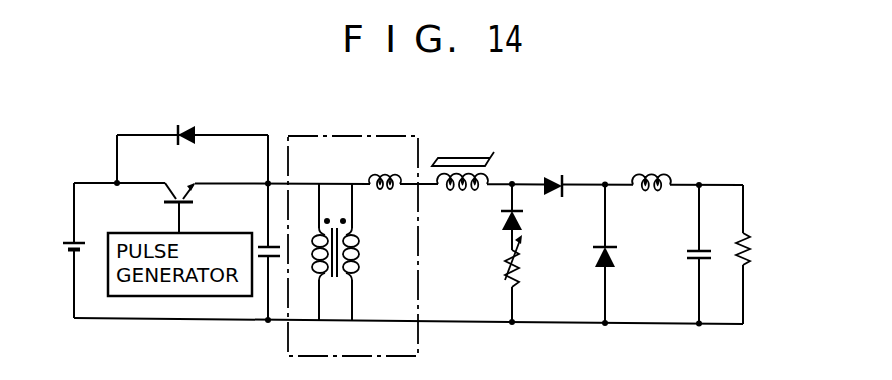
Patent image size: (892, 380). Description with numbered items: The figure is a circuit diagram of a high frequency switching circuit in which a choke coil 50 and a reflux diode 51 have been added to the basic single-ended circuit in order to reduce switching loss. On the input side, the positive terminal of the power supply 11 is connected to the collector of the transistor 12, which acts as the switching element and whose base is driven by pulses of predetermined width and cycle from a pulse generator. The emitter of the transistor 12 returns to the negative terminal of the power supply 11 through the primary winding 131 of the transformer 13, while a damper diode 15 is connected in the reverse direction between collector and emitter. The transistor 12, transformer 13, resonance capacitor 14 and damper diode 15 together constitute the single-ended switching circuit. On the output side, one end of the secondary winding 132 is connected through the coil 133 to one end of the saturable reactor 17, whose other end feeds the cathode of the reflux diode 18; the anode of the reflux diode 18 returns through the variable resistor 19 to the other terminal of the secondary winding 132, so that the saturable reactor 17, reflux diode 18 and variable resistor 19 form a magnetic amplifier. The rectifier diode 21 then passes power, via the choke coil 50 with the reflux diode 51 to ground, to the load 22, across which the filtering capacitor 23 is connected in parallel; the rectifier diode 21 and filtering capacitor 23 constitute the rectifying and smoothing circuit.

The power supply 11 is at (92, 240).
The transistor 12 is at (163, 194).
The transformer 13 is at (373, 135).
The resonance capacitor 14 is at (260, 238).
The damper diode 15 is at (188, 124).
The saturable reactor 17 is at (451, 191).
The reflux diode 18 is at (497, 226).
The variable resistor 19 is at (497, 279).
The rectifier diode 21 is at (554, 201).
The load 22 is at (738, 263).
The filtering capacitor 23 is at (686, 263).
The choke coil 50 is at (651, 175).
The reflux diode 51 is at (591, 262).
The primary winding 131 is at (310, 242).
The secondary winding 132 is at (361, 259).
The coil 133 is at (382, 190).